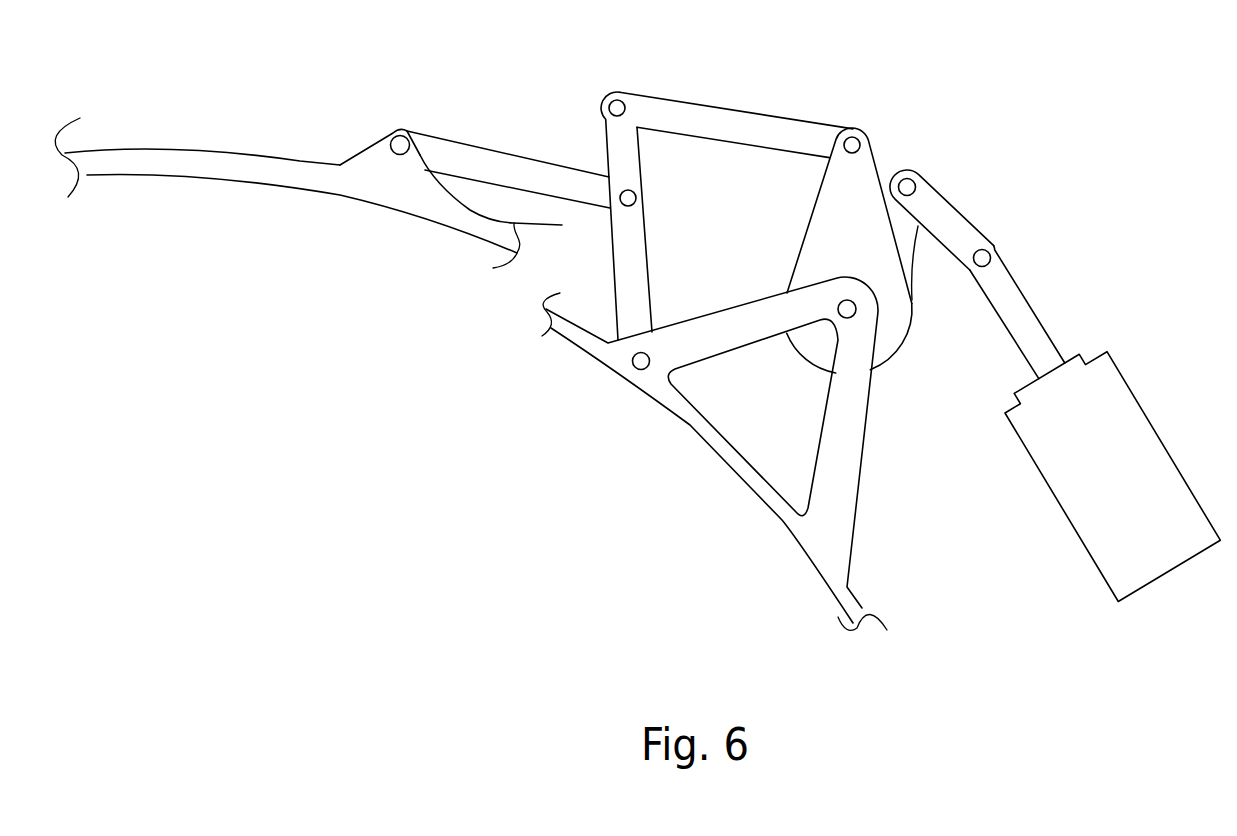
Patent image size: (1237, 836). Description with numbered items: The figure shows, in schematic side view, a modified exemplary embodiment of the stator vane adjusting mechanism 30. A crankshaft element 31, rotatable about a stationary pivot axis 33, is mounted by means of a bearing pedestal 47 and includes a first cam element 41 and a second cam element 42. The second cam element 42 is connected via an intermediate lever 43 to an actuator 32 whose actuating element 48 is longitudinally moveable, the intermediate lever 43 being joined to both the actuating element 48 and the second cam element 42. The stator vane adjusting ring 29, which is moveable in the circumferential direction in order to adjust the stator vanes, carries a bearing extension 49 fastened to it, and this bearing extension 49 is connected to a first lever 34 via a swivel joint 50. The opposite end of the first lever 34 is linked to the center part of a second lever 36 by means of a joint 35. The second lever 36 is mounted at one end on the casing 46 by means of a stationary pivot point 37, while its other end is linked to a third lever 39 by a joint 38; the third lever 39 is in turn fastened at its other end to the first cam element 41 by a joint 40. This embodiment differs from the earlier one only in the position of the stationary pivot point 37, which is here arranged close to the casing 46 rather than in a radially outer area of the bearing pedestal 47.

The stator vane adjusting ring 29 is at (213, 160).
The actuation mechanism 30 is at (1063, 167).
The crankshaft element 31 is at (890, 338).
The actuator 32 is at (1133, 433).
The stationary pivot axis 33 is at (840, 315).
The first lever 34 is at (513, 157).
The joint 35 is at (637, 197).
The second lever 36 is at (628, 272).
The stationary pivot point 37 is at (631, 370).
The joint 38 is at (622, 92).
The third lever 39 is at (735, 120).
The joint 40 is at (852, 130).
The first cam element 41 is at (853, 173).
The second cam element 42 is at (907, 246).
The intermediate lever 43 is at (942, 207).
The casing 46 is at (763, 487).
The bearing pedestal 47 is at (848, 458).
The actuating element 48 is at (1013, 293).
The bearing extension 49 is at (378, 166).
The swivel joint 50 is at (404, 137).